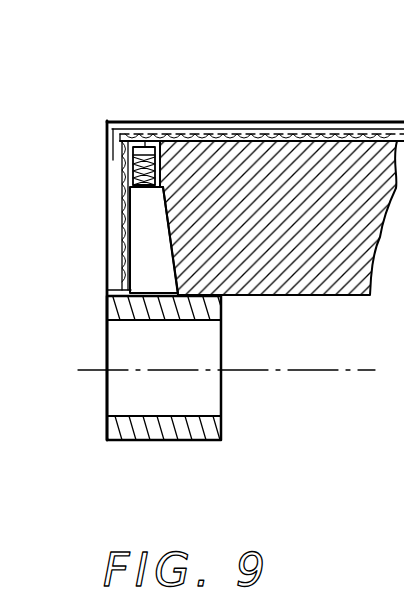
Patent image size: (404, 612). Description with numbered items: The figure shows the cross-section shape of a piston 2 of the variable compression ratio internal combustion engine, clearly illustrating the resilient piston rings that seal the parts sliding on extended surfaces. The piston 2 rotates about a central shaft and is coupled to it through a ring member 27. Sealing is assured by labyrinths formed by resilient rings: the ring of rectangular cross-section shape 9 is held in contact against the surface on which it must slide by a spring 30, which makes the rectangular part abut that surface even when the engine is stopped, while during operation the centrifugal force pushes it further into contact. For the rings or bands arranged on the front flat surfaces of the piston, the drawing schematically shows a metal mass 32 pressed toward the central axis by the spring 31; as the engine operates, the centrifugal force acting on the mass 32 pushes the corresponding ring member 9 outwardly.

The piston 2 is at (291, 268).
The rectangular cross-section ring 9 is at (242, 120).
The ring member 27 is at (168, 428).
The spring 30 is at (202, 121).
The spring 31 is at (146, 147).
The metal mass 32 is at (147, 252).